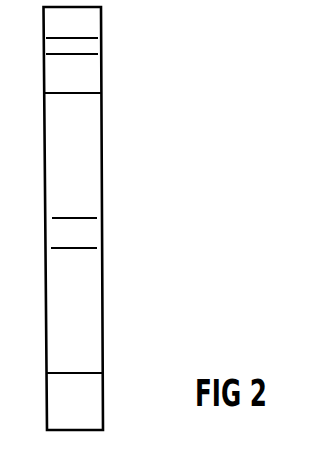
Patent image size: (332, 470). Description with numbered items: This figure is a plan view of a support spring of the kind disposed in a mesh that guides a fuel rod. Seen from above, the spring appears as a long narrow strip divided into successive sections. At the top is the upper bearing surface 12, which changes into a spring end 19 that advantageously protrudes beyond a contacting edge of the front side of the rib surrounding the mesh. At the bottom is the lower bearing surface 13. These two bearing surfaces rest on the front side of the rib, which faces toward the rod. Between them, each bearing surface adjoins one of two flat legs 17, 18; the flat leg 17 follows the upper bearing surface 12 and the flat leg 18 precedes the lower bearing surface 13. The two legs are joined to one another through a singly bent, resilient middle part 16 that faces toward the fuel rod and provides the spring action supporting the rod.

The upper bearing surface 12 is at (77, 79).
The spring end 19 is at (83, 22).
The flat leg 17 is at (83, 174).
The resilient middle part 16 is at (77, 236).
The flat leg 18 is at (75, 328).
The lower bearing surface 13 is at (83, 402).